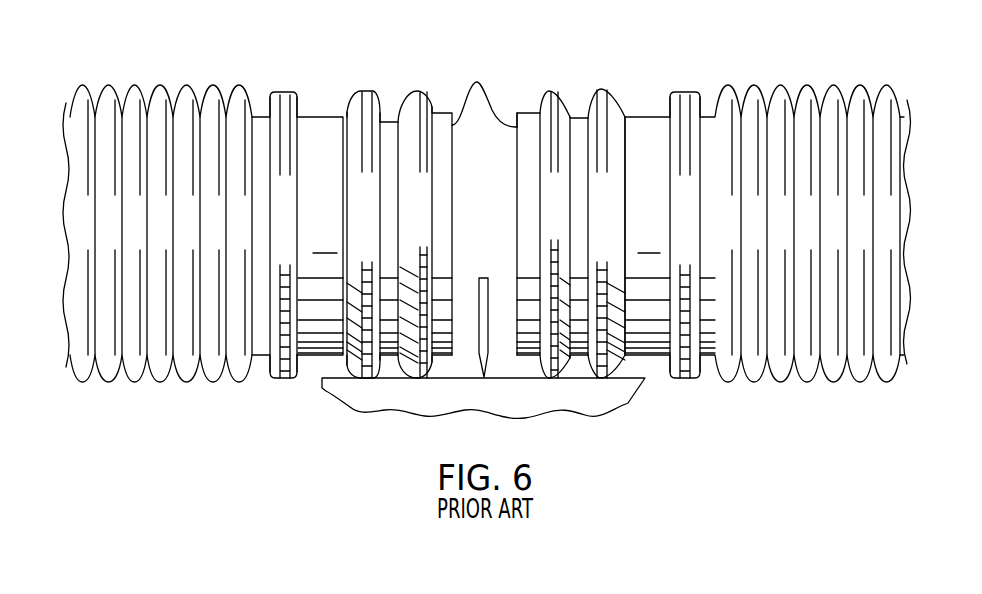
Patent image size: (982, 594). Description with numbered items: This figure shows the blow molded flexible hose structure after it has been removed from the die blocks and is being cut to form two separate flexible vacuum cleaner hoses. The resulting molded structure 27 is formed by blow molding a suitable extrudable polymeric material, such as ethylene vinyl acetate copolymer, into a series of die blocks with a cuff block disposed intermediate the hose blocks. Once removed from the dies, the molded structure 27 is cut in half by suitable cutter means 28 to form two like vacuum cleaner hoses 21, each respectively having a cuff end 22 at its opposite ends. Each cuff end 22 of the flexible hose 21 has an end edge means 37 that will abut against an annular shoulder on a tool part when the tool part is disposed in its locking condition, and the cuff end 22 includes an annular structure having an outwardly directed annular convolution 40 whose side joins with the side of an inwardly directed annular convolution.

The flexible vacuum cleaner hose 21 is at (151, 93).
The cuff end 22 is at (318, 116).
The outwardly directed annular convolution 40 is at (370, 86).
The molded structure 27 is at (547, 73).
The end edge means 37 is at (476, 83).
The cutter means 28 is at (484, 276).